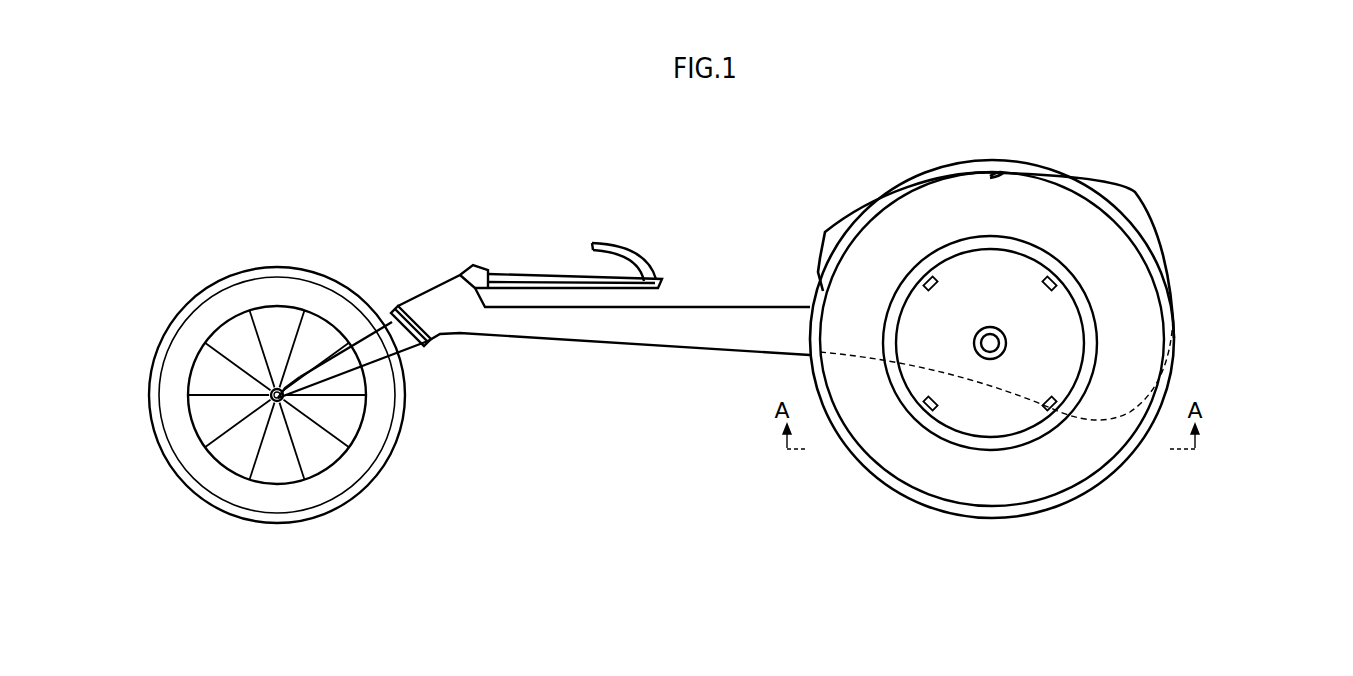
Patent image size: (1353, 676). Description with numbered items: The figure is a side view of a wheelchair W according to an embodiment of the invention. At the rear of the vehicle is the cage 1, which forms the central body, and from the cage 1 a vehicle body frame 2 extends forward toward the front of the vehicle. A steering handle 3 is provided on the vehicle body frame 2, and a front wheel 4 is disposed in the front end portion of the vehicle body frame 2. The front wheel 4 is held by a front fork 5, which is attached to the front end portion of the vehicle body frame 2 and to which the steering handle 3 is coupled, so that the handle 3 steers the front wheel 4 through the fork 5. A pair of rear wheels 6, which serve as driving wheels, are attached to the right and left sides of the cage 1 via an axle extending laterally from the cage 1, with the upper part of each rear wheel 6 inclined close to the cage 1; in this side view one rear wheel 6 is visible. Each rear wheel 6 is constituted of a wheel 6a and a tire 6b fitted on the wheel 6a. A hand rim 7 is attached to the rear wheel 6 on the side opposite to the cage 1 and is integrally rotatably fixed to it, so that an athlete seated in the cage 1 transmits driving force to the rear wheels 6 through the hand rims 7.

The cage 1 is at (1135, 193).
The vehicle body frame 2 is at (706, 310).
The steering handle 3 is at (540, 276).
The front wheel 4 is at (197, 291).
The front fork 5 is at (345, 368).
The rear wheel 6 is at (992, 355).
The wheel 6a is at (1063, 480).
The tire 6b is at (1045, 503).
The hand rim 7 is at (1000, 240).
The wheelchair W is at (1190, 128).